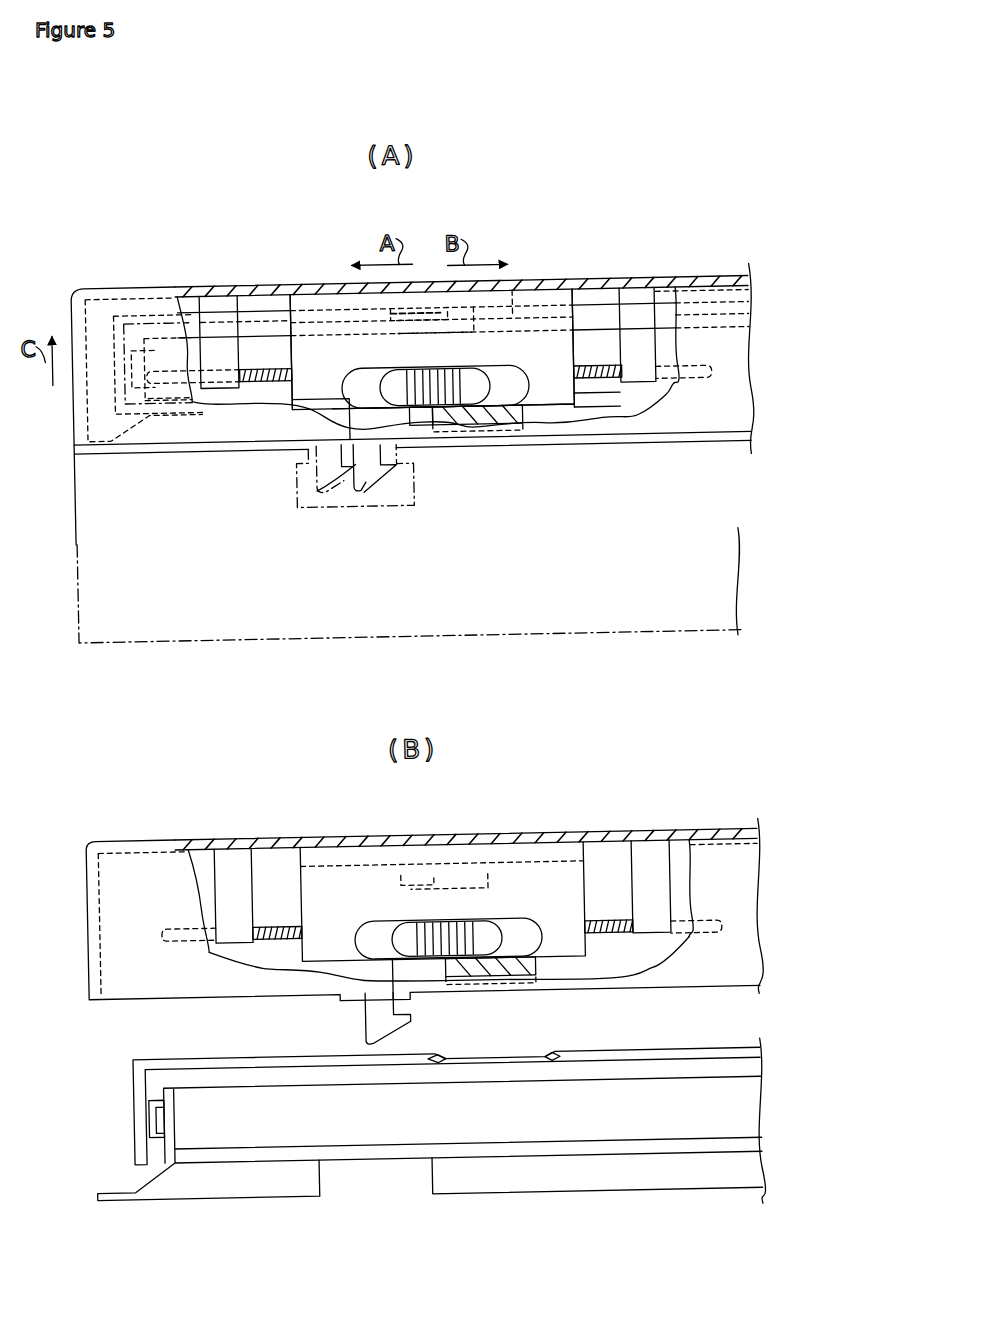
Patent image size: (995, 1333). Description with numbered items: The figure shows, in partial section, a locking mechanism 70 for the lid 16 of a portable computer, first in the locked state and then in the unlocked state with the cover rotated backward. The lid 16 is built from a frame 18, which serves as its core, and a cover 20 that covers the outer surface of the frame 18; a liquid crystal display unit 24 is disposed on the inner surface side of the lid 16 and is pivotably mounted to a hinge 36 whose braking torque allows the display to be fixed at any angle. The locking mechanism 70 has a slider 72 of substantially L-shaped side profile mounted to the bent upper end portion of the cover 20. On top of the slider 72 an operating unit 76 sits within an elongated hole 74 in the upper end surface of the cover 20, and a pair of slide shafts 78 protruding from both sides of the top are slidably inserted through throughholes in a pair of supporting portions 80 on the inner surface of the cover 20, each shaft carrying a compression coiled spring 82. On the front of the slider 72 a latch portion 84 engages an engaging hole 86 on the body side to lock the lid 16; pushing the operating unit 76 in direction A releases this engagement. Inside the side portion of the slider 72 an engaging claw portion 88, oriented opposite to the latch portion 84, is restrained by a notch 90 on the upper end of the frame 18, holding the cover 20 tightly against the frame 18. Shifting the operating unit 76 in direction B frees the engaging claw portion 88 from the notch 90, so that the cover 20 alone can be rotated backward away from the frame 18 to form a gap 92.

In FIG. 5A, the lid 16 is at (65, 285).
In FIG. 5B, the lid 16 is at (425, 912).
In FIG. 5A, the frame 18 is at (168, 315).
In FIG. 5B, the frame 18 is at (157, 1059).
In FIG. 5A, the cover 20 is at (320, 288).
In FIG. 5B, the cover 20 is at (427, 842).
In FIG. 5B, the liquid crystal display unit 24 is at (245, 1136).
In FIG. 5B, the hinge 36 is at (150, 1110).
In FIG. 5A, the locking mechanism 70 is at (472, 240).
In FIG. 5B, the locking mechanism 70 is at (492, 814).
In FIG. 5A, the slider 72 is at (546, 361).
In FIG. 5A, the elongated hole 74 is at (527, 408).
In FIG. 5B, the elongated hole 74 is at (490, 971).
In FIG. 5A, the operating unit 76 is at (480, 403).
In FIG. 5B, the operating unit 76 is at (487, 953).
In FIG. 5A, the slide shafts 78 is at (190, 402).
In FIG. 5B, the slide shafts 78 is at (208, 938).
In FIG. 5A, the supporting portions 80 is at (227, 345).
In FIG. 5B, the supporting portions 80 is at (247, 884).
In FIG. 5A, the compression coiled spring 82 is at (270, 370).
In FIG. 5B, the compression coiled spring 82 is at (281, 930).
In FIG. 5A, the latch portion 84 is at (365, 494).
In FIG. 5B, the latch portion 84 is at (388, 1018).
In FIG. 5A, the engaging hole 86 is at (413, 488).
In FIG. 5A, the engaging claw portion 88 is at (420, 336).
In FIG. 5B, the engaging claw portion 88 is at (433, 892).
In FIG. 5A, the notch 90 is at (510, 310).
In FIG. 5B, the notch 90 is at (463, 1060).
In FIG. 5B, the gap 92 is at (577, 1035).